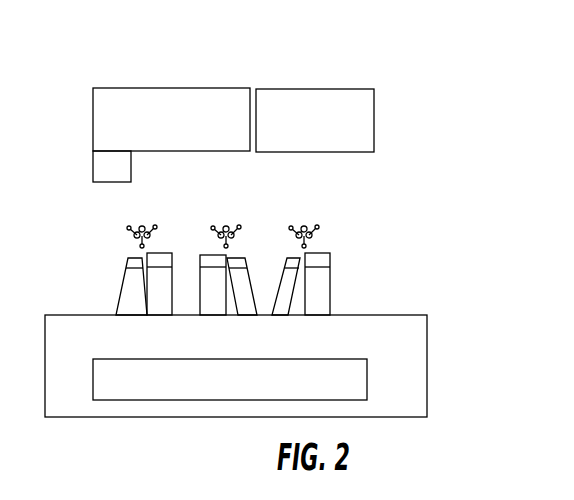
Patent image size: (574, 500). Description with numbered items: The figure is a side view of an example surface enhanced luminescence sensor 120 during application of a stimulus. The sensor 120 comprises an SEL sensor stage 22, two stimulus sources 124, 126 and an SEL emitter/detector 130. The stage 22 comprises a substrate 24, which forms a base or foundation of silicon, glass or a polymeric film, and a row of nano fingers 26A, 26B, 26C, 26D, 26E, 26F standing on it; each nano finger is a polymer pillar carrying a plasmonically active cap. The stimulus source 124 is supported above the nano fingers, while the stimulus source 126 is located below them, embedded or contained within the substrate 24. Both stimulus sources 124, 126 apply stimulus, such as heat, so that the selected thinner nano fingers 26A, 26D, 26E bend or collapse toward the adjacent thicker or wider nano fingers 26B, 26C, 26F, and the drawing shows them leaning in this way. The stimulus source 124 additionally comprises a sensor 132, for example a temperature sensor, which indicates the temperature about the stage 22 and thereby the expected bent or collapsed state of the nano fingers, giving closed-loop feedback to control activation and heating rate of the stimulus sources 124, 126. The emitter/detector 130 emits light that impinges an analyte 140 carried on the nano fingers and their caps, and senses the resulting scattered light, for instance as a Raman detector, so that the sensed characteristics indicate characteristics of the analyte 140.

The SEL sensor 120 is at (245, 98).
The stimulus source 124 is at (93, 127).
The SEL emitter/detector 130 is at (374, 126).
The sensor 132 is at (93, 163).
The SEL sensor stage 22 is at (267, 366).
The substrate 24 is at (427, 385).
The stimulus source 126 is at (190, 400).
The nano finger 26A is at (115, 285).
The nano finger 26B is at (173, 277).
The nano finger 26C is at (207, 254).
The nano finger 26D is at (250, 270).
The nano finger 26E is at (283, 270).
The nano finger 26F is at (331, 280).
The analyte 140 is at (139, 226).